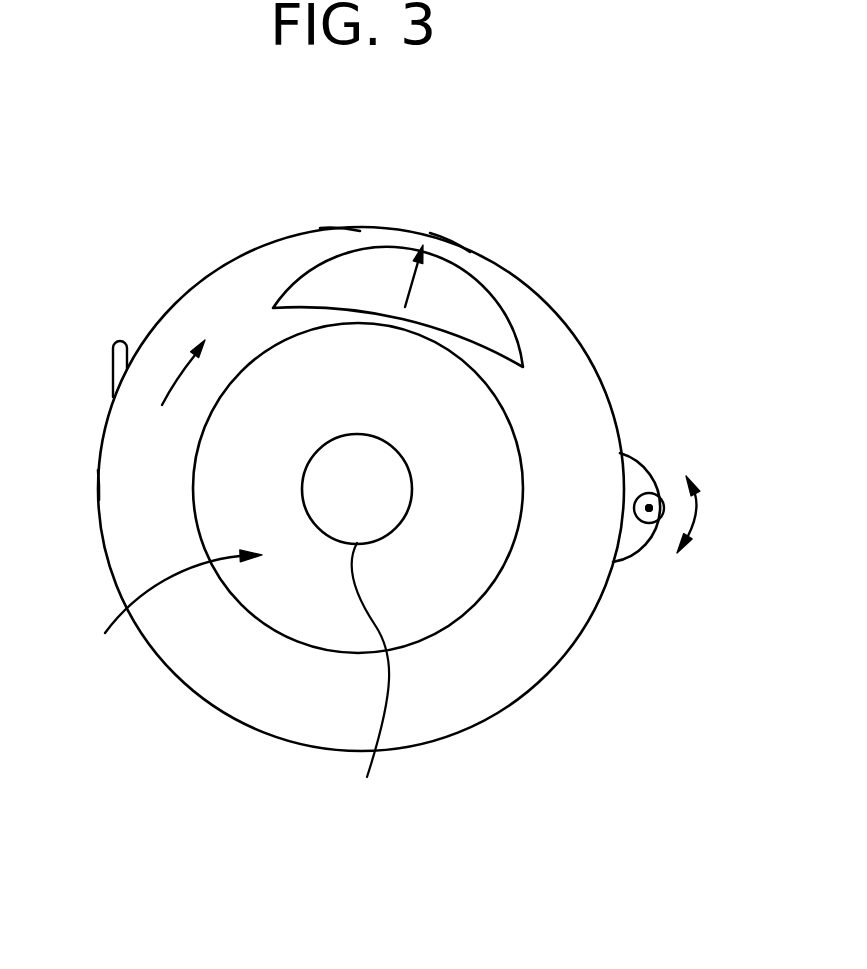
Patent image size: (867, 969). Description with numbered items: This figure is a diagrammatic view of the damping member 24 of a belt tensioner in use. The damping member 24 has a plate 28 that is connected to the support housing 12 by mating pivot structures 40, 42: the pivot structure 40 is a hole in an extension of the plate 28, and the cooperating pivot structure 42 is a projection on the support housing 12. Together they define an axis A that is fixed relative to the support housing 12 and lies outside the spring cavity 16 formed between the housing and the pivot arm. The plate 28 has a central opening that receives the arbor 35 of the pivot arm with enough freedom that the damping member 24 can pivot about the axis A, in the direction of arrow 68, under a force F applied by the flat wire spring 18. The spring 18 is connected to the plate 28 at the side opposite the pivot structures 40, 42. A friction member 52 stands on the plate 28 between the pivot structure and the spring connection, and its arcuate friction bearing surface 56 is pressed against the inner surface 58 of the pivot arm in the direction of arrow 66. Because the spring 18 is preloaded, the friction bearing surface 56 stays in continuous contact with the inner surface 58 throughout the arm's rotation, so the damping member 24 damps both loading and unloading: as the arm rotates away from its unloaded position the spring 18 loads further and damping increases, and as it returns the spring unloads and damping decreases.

The support housing 12 is at (500, 712).
The spring cavity 16 is at (161, 611).
The flat wire spring 18 is at (113, 362).
The damping member 24 is at (125, 475).
The plate 28 is at (565, 375).
The arbor 35 is at (357, 630).
The pivot structure 40 is at (647, 537).
The cooperating pivot structure 42 is at (649, 507).
The friction member 52 is at (488, 295).
The friction bearing surface 56 is at (430, 233).
The inner surface 58 is at (320, 228).
The arrow 66 is at (407, 283).
The arrow 68 is at (695, 515).
The force F is at (181, 372).
The axis of rotation A is at (648, 508).